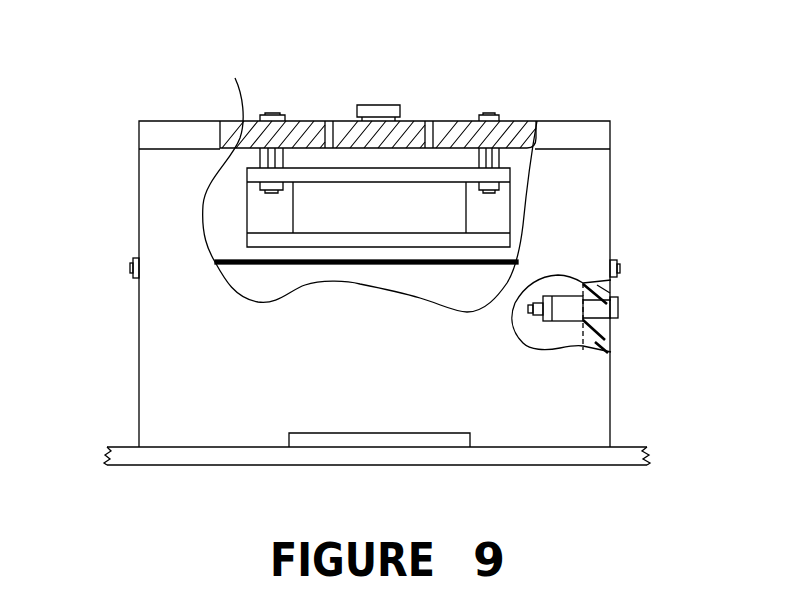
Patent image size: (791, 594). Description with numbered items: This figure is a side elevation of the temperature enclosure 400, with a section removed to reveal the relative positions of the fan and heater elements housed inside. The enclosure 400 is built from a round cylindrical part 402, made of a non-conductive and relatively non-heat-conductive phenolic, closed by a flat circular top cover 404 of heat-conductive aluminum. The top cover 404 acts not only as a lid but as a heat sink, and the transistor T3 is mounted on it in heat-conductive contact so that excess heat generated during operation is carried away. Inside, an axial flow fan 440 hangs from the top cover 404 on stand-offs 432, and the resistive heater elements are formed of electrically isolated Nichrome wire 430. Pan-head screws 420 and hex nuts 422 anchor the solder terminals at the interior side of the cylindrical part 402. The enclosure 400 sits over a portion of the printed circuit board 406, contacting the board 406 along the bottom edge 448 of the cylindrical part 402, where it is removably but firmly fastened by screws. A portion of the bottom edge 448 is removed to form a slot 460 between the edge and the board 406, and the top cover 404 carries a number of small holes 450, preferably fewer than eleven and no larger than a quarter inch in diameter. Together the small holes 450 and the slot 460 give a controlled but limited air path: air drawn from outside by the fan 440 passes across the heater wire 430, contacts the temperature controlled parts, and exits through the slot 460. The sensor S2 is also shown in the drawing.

The temperature enclosure 400 is at (613, 215).
The round cylindrical part 402 is at (619, 322).
The top cover 404 is at (168, 120).
The printed circuit board 406 is at (585, 457).
The pan-head screws 420 is at (618, 272).
The hex nuts 422 is at (618, 259).
The Nichrome wire 430 is at (292, 265).
The stand-offs 432 is at (288, 148).
The axial flow fan 440 is at (362, 181).
The bottom edge 448 is at (193, 447).
The small holes 450 is at (328, 121).
The slot 460 is at (423, 433).
The transistor T3 is at (387, 105).
The sensor S2 is at (533, 316).